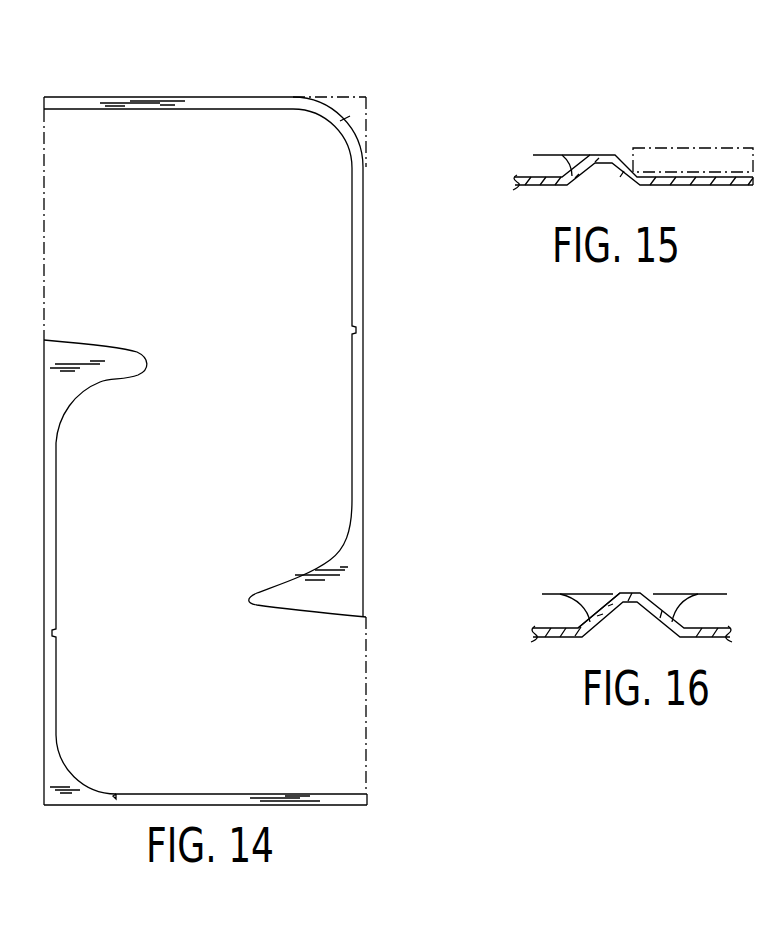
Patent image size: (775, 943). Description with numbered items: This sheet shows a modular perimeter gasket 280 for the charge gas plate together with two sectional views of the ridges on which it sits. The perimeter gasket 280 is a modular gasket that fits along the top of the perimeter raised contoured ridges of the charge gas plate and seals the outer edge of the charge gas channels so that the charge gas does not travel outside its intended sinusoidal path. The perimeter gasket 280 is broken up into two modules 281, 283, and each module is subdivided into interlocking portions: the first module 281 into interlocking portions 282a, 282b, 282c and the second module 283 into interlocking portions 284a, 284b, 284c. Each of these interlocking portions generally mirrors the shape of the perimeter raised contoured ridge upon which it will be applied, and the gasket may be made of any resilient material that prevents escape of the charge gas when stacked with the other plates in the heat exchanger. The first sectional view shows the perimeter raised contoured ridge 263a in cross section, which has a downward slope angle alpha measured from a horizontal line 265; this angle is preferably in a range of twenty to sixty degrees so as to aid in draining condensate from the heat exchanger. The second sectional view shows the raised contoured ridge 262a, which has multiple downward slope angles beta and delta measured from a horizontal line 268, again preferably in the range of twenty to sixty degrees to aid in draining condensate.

In FIG. 14, the perimeter gasket 280 is at (181, 90).
In FIG. 14, the module 281 is at (248, 111).
In FIG. 14, the interlocking portion 282a is at (353, 559).
In FIG. 14, the interlocking portion 282b is at (352, 277).
In FIG. 14, the interlocking portion 282c is at (83, 110).
In FIG. 14, the module 283 is at (57, 590).
In FIG. 14, the interlocking portion 284a is at (95, 383).
In FIG. 14, the interlocking portion 284b is at (53, 697).
In FIG. 14, the interlocking portion 284c is at (207, 796).
In FIG. 15, the horizontal line 265 is at (566, 175).
In FIG. 15, the perimeter raised contoured ridge 263a is at (604, 155).
In FIG. 16, the horizontal line 268 is at (580, 628).
In FIG. 16, the raised contoured ridge 262a is at (630, 593).